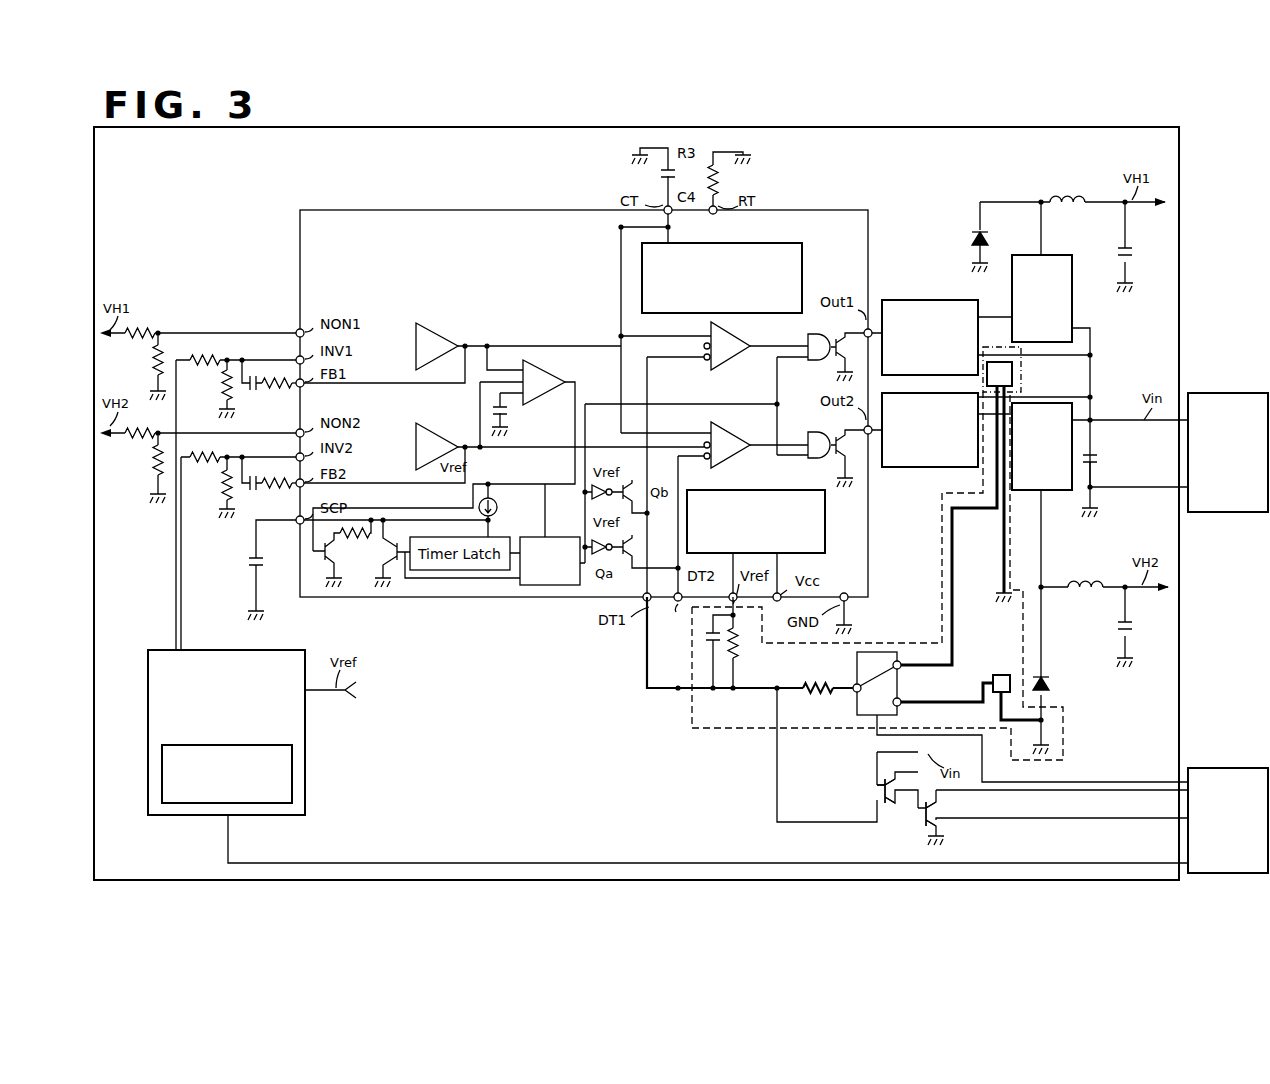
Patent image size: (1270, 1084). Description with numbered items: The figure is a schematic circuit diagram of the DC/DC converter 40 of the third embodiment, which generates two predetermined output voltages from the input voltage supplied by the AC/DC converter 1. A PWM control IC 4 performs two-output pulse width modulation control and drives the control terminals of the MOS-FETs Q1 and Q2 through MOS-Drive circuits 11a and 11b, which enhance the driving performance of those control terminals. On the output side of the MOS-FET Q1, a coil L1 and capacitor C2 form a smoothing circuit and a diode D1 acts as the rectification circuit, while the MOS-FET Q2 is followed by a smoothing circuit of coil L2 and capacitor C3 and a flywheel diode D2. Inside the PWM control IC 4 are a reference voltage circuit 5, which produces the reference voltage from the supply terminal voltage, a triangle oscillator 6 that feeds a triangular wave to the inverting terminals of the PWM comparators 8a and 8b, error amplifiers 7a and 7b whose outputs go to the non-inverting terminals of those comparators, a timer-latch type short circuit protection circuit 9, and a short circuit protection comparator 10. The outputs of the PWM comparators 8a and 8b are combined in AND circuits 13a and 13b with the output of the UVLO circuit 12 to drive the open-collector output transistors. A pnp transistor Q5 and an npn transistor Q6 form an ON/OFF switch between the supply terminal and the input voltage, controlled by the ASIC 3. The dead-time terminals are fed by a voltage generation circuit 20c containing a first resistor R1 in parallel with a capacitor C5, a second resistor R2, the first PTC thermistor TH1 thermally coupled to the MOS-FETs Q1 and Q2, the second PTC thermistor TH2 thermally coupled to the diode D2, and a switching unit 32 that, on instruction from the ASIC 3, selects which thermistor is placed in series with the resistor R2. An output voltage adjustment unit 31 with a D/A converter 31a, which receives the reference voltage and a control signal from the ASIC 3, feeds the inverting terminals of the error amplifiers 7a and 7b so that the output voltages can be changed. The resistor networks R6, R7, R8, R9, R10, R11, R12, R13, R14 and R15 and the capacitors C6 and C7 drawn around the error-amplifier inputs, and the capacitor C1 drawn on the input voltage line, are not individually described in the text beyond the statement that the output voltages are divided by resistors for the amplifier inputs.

The DC/DC converter 40 is at (1181, 168).
The PWM control IC 4 is at (358, 210).
The triangle oscillator 6 is at (765, 243).
The error amplifier 7a is at (436, 331).
The error amplifier 7b is at (436, 431).
The PWM comparator 8a is at (738, 335).
The PWM comparator 8b is at (730, 434).
The timer-latch type short circuit protection circuit 9 is at (500, 534).
The SCP comparator 10 is at (548, 372).
The UVLO circuit 12 is at (548, 537).
The AND circuit 13a is at (820, 348).
The AND circuit 13b is at (821, 438).
The reference voltage circuit 5 is at (779, 490).
The MOS-Drive circuit 11a is at (922, 298).
The MOS-Drive circuit 11b is at (922, 468).
The AC/DC converter 1 is at (1229, 393).
The ASIC 3 is at (1228, 768).
The output voltage adjustment unit 31 is at (248, 720).
The D/A converter 31a is at (292, 774).
The switching unit 32 is at (872, 652).
The voltage generation circuit 20c is at (722, 730).
The first resistor R1 is at (738, 651).
The second resistor R2 is at (818, 696).
The resistor R6 is at (149, 330).
The resistor R7 is at (151, 365).
The resistor R8 is at (134, 437).
The resistor R9 is at (154, 478).
The resistor R10 is at (200, 352).
The resistor R11 is at (225, 390).
The resistor R12 is at (202, 462).
The resistor R13 is at (226, 503).
The resistor R14 is at (274, 390).
The resistor R15 is at (274, 486).
The capacitor C1 is at (1105, 450).
The capacitor C2 is at (1128, 265).
The capacitor C3 is at (1128, 640).
The capacitor C5 is at (710, 645).
The capacitor C6 is at (254, 392).
The capacitor C7 is at (252, 492).
The coil L1 is at (1068, 192).
The coil L2 is at (1084, 579).
The diode D1 is at (968, 239).
The flywheel diode D2 is at (1052, 684).
The MOS-FET Q1 is at (1054, 254).
The MOS-FET Q2 is at (1046, 502).
The pnp transistor Q5 is at (874, 793).
The npn transistor Q6 is at (939, 830).
The first PTC thermistor TH1 is at (1014, 374).
The second PTC thermistor TH2 is at (1000, 675).